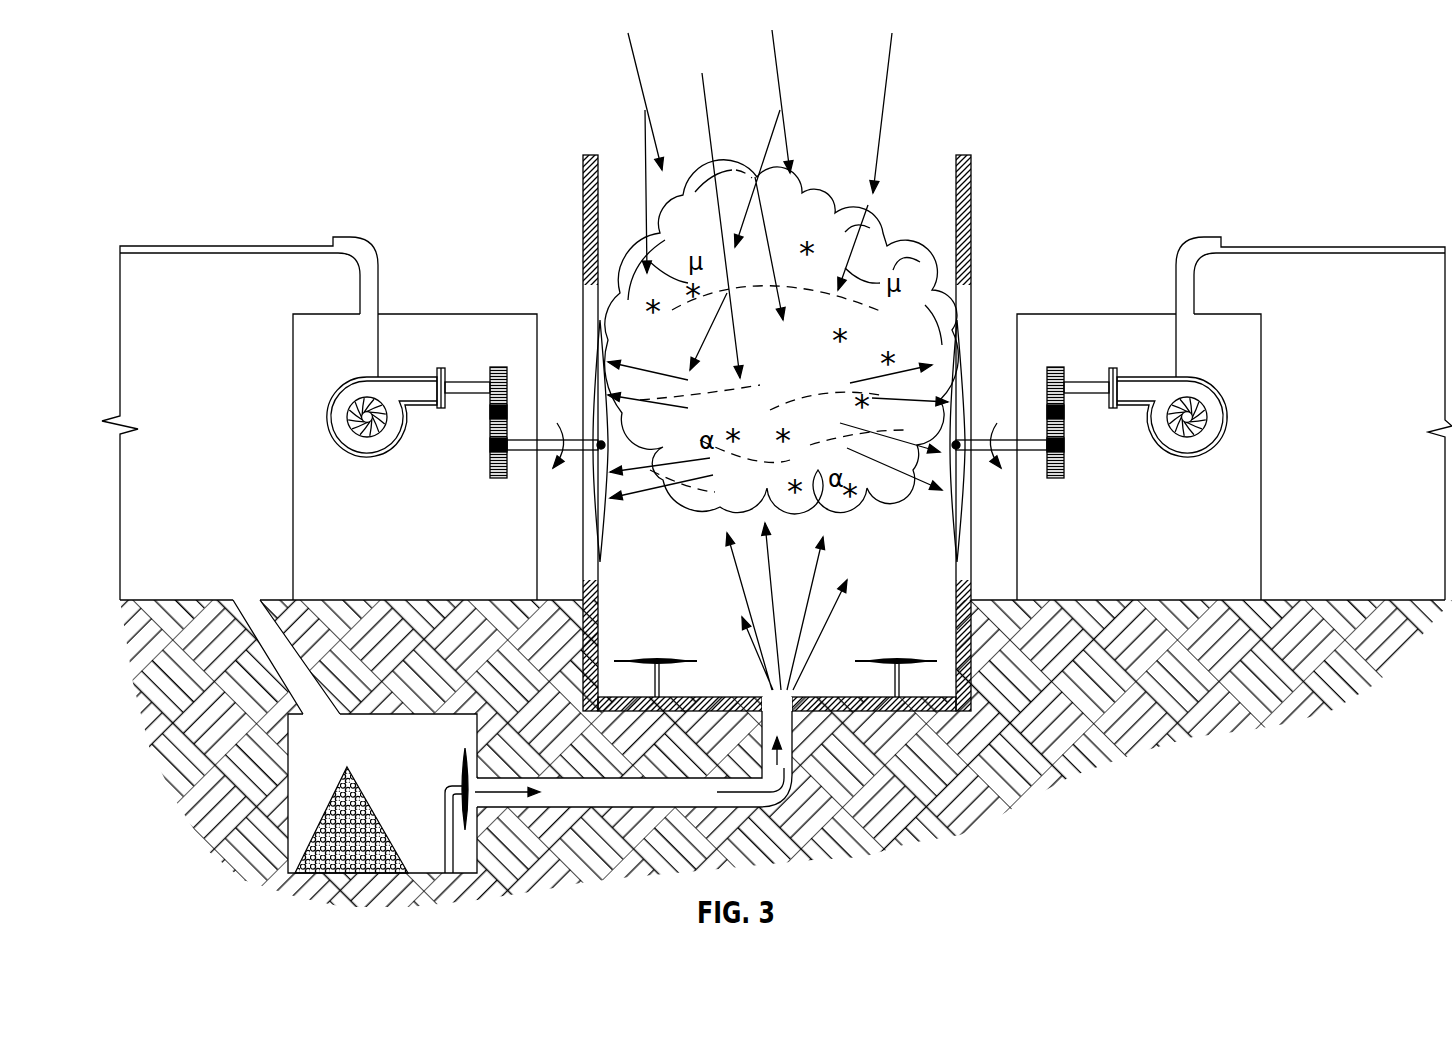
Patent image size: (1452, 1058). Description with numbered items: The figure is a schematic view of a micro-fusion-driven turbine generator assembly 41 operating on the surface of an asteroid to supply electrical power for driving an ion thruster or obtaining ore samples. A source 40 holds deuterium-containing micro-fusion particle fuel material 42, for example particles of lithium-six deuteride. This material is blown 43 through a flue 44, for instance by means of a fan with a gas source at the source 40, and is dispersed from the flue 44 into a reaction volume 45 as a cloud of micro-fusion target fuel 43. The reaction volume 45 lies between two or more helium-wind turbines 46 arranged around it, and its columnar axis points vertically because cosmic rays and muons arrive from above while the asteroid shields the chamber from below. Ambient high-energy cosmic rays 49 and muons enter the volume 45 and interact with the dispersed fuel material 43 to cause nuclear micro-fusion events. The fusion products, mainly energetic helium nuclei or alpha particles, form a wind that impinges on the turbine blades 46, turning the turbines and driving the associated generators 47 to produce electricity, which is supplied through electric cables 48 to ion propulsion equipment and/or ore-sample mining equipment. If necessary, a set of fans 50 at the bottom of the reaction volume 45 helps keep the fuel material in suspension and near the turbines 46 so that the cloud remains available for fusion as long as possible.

The source 40 is at (420, 713).
The generator assembly 41 is at (515, 192).
The micro-fusion particle fuel material 42 is at (350, 763).
The cloud of micro-fusion target fuel 43 is at (833, 610).
The flue 44 is at (757, 733).
The reaction volume 45 is at (660, 567).
The helium-wind turbines 46 is at (594, 353).
The generators 47 is at (367, 458).
The electric cables 48 is at (226, 244).
The cosmic rays 49 is at (778, 70).
The fans 50 is at (655, 659).